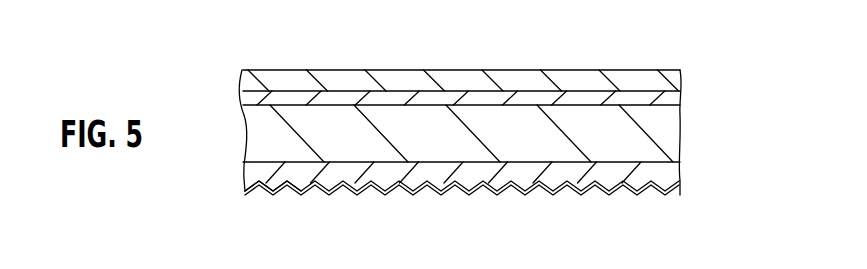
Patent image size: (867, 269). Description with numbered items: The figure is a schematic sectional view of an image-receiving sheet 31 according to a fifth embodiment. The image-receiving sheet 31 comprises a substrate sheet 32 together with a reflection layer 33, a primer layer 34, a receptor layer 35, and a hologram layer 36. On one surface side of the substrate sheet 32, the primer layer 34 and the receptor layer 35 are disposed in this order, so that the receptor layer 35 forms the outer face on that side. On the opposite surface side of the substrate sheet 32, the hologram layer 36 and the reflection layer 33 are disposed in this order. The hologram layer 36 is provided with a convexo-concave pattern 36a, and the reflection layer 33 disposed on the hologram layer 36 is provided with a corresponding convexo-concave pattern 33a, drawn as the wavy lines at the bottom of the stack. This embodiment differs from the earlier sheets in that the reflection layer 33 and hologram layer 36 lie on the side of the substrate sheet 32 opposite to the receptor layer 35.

The image-receiving sheet 31 is at (652, 57).
The substrate sheet 32 is at (668, 127).
The reflection layer 33 is at (682, 193).
The convexo-concave pattern 33a is at (318, 193).
The primer layer 34 is at (673, 97).
The receptor layer 35 is at (245, 82).
The hologram layer 36 is at (673, 175).
The convexo-concave pattern 36a is at (278, 182).